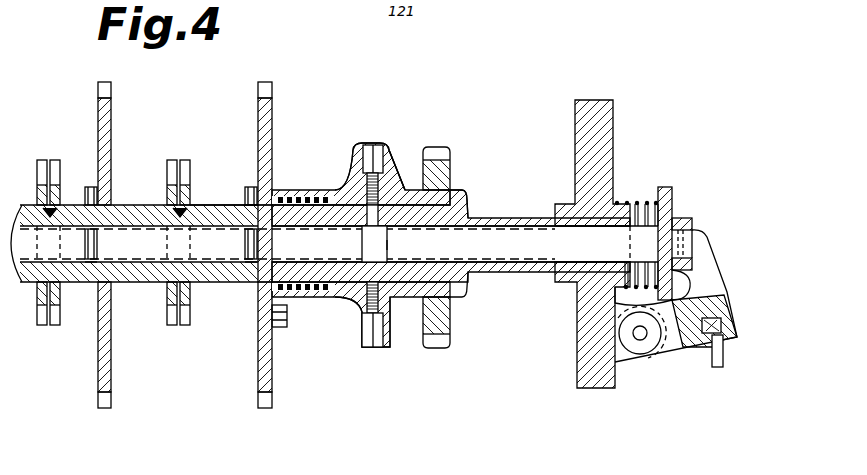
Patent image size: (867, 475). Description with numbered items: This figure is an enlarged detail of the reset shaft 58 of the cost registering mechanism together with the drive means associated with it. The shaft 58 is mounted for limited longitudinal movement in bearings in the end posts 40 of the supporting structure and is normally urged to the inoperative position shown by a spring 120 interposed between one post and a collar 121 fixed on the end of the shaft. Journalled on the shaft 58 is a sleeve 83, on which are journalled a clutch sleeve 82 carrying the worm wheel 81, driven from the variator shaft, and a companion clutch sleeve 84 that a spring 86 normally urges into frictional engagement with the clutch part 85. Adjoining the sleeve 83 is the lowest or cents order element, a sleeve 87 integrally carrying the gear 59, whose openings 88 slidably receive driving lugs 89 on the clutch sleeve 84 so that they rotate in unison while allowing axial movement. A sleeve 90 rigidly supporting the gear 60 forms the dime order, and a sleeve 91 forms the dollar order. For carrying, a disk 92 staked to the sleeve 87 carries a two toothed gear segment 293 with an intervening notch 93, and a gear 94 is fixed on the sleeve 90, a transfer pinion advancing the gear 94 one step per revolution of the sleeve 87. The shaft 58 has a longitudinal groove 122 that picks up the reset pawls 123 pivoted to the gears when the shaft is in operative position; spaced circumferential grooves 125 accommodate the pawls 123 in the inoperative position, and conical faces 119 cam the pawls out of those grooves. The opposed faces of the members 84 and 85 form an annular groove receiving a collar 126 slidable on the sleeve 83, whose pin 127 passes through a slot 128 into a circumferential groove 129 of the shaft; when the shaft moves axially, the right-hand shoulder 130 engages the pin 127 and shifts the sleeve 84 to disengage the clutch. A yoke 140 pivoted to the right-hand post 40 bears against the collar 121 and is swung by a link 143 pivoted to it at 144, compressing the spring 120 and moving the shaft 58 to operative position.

The sleeve 91 is at (20, 205).
The sleeve 90 is at (128, 207).
The disk 92 is at (52, 195).
The notch 93 is at (57, 160).
The gear 94 is at (43, 160).
The two toothed gear segment 293 is at (172, 160).
The gear 60 is at (111, 140).
The gear 59 is at (272, 135).
The reset pawls 123 is at (95, 190).
The longitudinally extending groove 122 is at (230, 203).
The sleeve 87 is at (255, 192).
The conical faces 119 is at (99, 245).
The circumferential grooves 125 is at (94, 264).
The openings 88 is at (268, 190).
The driving lugs 89 is at (272, 197).
The spring 86 is at (306, 197).
The clutch sleeve 84 is at (335, 187).
The clutch part 85 is at (371, 145).
The clutch sleeve 82 is at (400, 190).
The worm wheel 81 is at (440, 147).
The sleeve 83 is at (461, 200).
The pin 127 is at (380, 222).
The slot 128 is at (360, 224).
The right-hand shoulder 130 is at (388, 249).
The circumferential groove 129 is at (362, 288).
The collar 126 is at (360, 335).
The reset shaft 58 is at (465, 236).
The end posts 40 is at (575, 153).
The spring 120 is at (638, 200).
The collar 121 is at (668, 188).
The yoke 140 is at (712, 265).
The pivot 144 is at (718, 326).
The link 143 is at (714, 352).